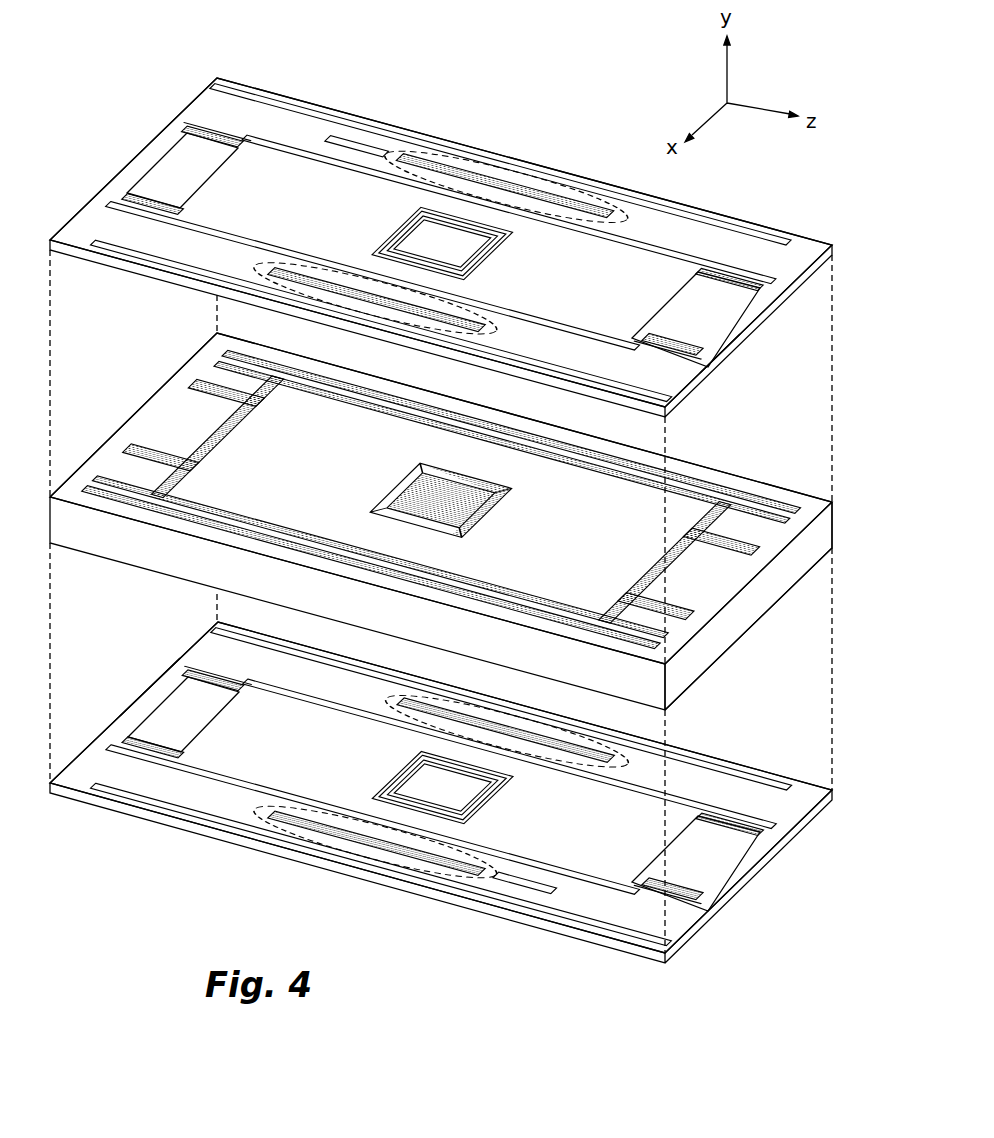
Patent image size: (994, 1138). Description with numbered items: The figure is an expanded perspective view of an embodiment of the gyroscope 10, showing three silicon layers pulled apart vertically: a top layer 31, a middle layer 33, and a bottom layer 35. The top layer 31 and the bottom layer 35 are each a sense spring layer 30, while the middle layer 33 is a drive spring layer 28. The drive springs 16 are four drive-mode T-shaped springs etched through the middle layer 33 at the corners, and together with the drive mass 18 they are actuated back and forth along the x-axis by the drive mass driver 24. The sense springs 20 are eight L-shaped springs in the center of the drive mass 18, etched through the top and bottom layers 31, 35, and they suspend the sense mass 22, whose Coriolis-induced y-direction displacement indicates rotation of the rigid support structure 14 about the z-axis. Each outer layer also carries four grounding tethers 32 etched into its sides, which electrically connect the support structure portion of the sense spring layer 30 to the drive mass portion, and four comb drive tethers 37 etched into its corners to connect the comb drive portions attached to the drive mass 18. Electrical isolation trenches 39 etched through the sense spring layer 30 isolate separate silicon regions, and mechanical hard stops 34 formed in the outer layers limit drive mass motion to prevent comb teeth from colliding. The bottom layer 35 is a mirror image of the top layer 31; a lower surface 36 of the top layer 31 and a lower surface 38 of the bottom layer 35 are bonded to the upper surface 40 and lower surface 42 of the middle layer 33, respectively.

The gyroscope 10 is at (480, 68).
The rigid support structure 14 is at (732, 348).
The drive springs 16 is at (530, 603).
The drive mass 18 is at (340, 241).
The sense springs 20 is at (485, 258).
The sense mass 22 is at (457, 260).
The drive mass driver 24 is at (517, 172).
The drive spring layer 28 is at (441, 519).
The sense spring layer 30 is at (437, 242).
The top layer 31 is at (157, 138).
The grounding tethers 32 is at (187, 152).
The middle layer 33 is at (183, 364).
The mechanical hard stops 34 is at (367, 160).
The bottom layer 35 is at (183, 656).
The lower surface of the top layer 36 is at (765, 312).
The comb drive tethers 37 is at (248, 117).
The lower surface of the bottom layer 38 is at (146, 717).
The electrical isolation trenches 39 is at (652, 253).
The upper surface of the middle layer 40 is at (148, 435).
The lower surface of the middle layer 42 is at (745, 634).